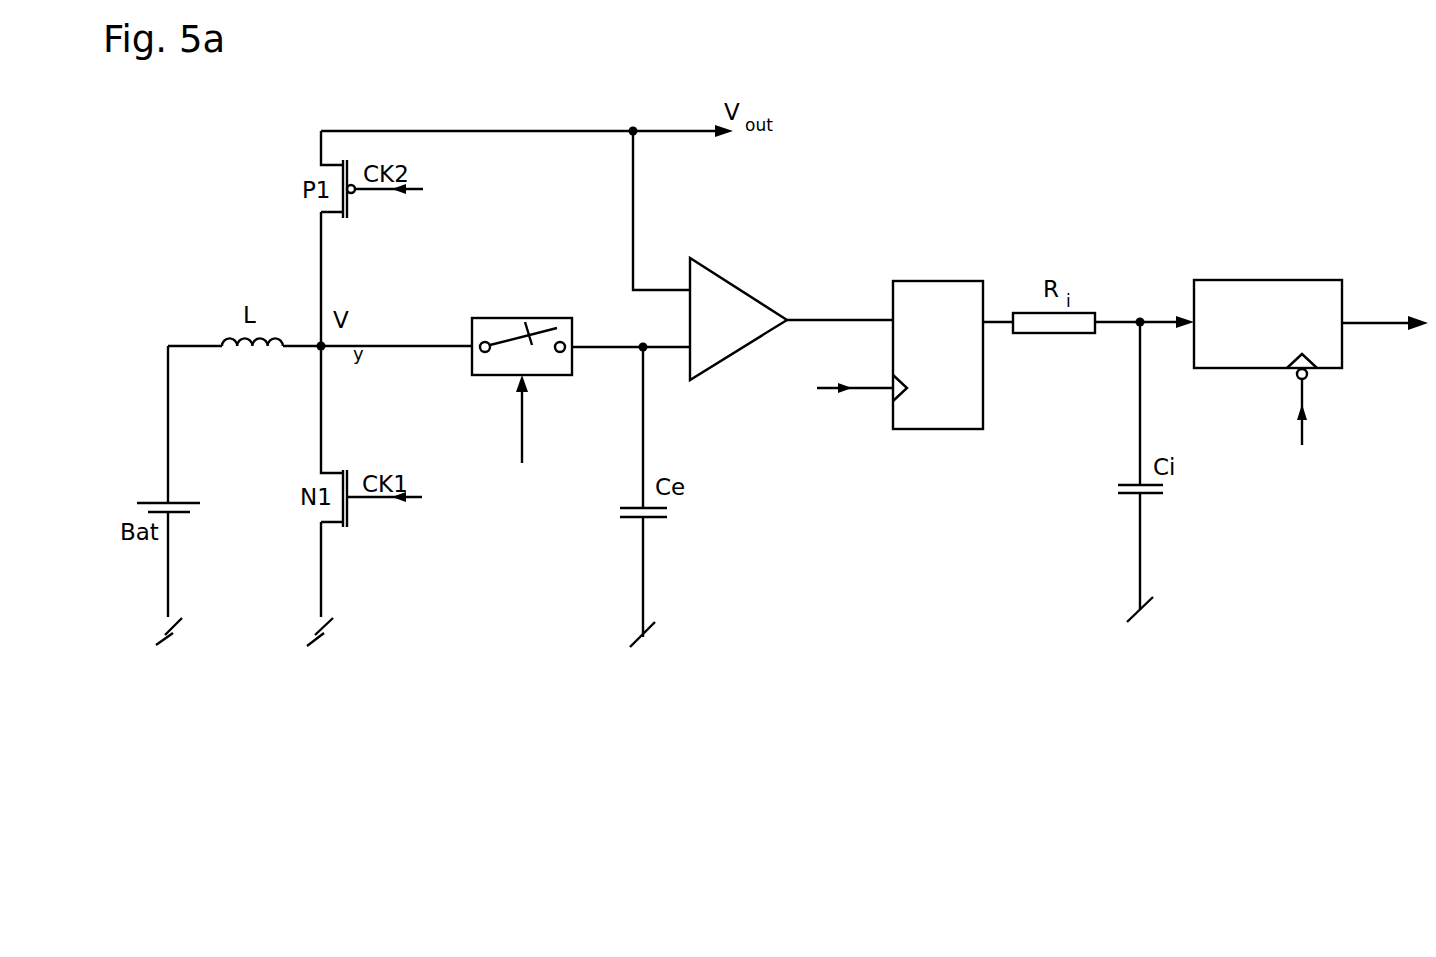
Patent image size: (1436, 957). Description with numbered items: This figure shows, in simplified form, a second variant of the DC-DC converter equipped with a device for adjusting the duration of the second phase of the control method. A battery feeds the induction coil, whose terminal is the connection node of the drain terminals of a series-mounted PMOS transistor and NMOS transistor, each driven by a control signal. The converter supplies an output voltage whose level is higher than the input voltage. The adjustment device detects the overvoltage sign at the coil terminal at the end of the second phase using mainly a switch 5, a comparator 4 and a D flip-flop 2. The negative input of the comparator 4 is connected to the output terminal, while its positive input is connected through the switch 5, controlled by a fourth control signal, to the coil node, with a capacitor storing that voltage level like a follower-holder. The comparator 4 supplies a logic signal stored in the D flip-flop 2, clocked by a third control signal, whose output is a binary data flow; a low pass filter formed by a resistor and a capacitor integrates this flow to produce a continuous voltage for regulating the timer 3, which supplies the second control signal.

The D flip-flop 2 is at (957, 412).
The timer 3 is at (1268, 292).
The comparator 4 is at (748, 302).
The switch 5 is at (500, 330).